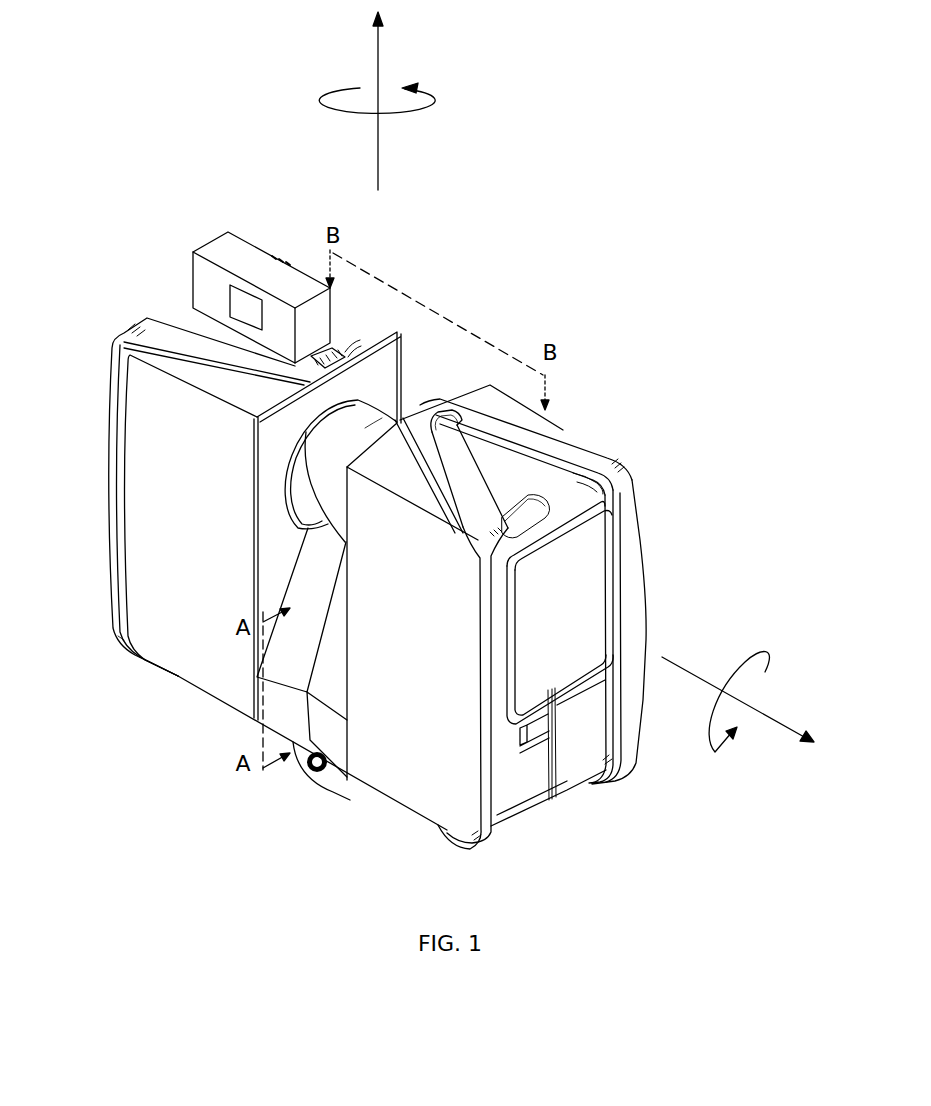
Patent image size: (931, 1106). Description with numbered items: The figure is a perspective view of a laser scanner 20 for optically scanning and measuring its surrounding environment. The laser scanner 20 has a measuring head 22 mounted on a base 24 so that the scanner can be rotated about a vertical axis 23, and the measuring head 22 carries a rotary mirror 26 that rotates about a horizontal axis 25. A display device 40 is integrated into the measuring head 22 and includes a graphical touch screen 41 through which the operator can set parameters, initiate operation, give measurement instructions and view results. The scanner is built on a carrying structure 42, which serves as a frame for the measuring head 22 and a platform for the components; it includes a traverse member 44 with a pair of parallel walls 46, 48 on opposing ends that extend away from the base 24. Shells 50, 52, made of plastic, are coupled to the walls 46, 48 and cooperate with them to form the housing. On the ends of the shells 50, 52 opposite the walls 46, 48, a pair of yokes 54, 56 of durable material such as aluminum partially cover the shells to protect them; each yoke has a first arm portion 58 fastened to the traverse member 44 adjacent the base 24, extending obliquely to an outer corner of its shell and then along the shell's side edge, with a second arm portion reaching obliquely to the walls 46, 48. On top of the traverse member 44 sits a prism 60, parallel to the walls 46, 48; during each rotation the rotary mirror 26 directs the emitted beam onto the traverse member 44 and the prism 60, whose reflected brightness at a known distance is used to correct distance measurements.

The laser scanner 20 is at (217, 114).
The measuring head 22 is at (610, 332).
The vertical axis 23 is at (382, 68).
The base 24 is at (318, 775).
The horizontal axis 25 is at (790, 723).
The rotary mirror 26 is at (560, 428).
The display device 40 is at (670, 584).
The graphical touch screen 41 is at (585, 555).
The carrying structure 42 is at (203, 794).
The traverse member 44 is at (330, 772).
The wall 46 is at (473, 393).
The wall 48 is at (384, 367).
The shell 50 is at (246, 554).
The shell 52 is at (463, 773).
The yoke 54 is at (597, 447).
The yoke 56 is at (163, 333).
The first arm portion 58 is at (130, 657).
The prism 60 is at (347, 747).